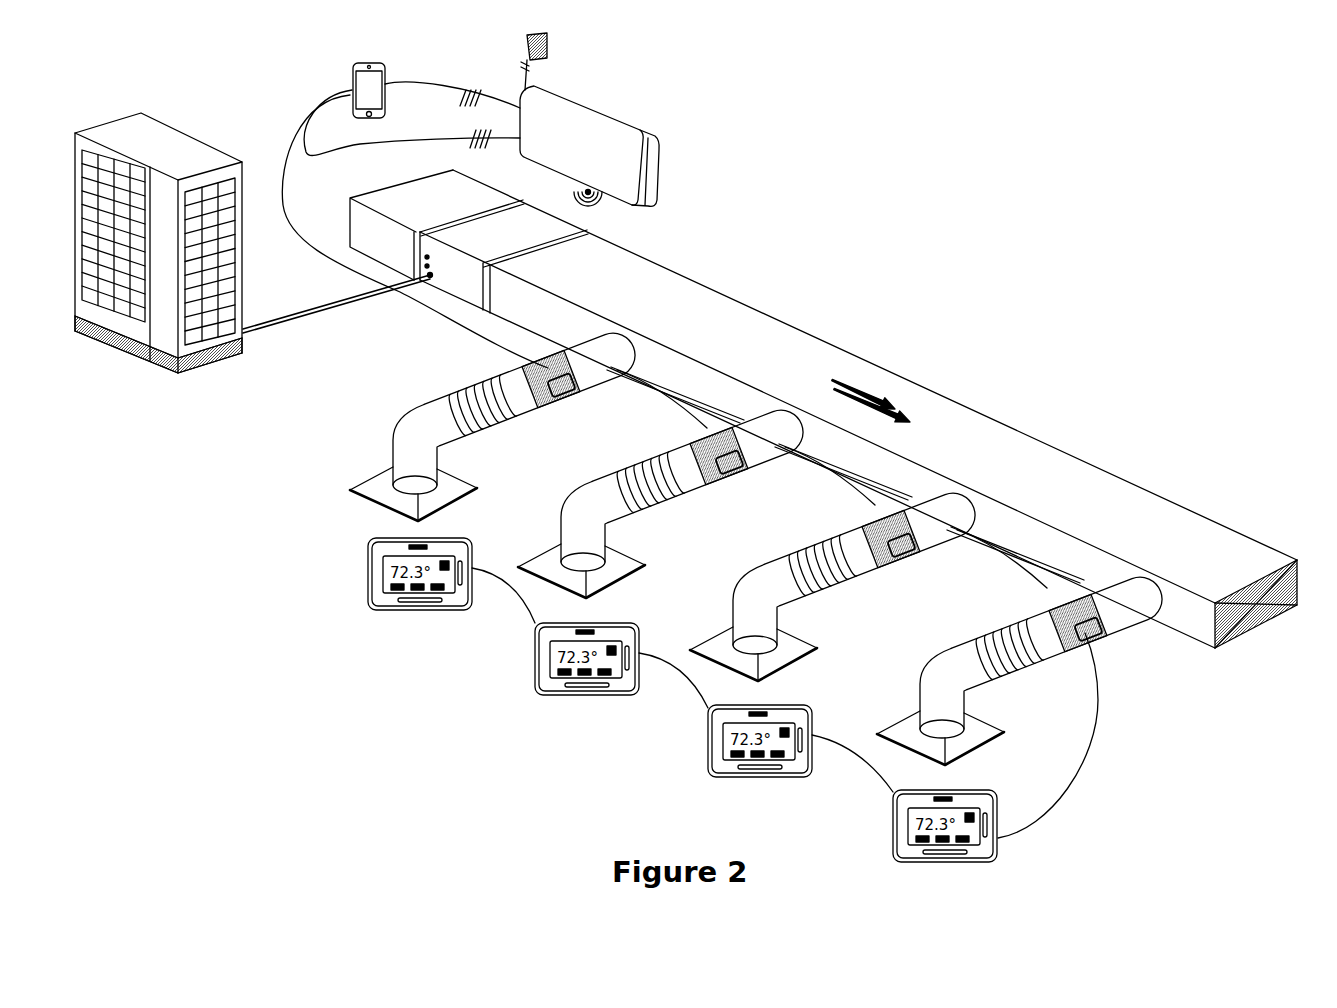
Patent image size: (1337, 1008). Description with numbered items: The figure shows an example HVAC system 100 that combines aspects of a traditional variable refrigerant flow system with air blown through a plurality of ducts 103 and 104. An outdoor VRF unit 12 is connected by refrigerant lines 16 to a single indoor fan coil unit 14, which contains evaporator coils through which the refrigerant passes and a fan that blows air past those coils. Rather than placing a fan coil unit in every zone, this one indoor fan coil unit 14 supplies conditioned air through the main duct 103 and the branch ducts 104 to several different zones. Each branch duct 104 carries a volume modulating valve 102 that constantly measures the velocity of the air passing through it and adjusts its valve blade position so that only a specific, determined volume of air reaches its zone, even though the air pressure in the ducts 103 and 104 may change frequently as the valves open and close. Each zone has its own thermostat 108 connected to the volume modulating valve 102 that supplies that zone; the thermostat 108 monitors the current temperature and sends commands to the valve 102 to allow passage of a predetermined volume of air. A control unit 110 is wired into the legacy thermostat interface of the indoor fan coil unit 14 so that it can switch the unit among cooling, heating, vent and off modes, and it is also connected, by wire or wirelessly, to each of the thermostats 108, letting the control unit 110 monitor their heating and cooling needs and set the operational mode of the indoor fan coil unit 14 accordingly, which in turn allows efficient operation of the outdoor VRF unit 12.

The outdoor VRF unit 12 is at (161, 363).
The indoor fan coil unit 14 is at (515, 246).
The refrigerant lines 16 is at (277, 325).
The HVAC system 100 is at (686, 447).
The volume modulating valve 102 is at (1093, 625).
The duct 103 is at (990, 437).
The duct 104 is at (417, 423).
The thermostat 108 is at (372, 572).
The control unit 110 is at (620, 130).